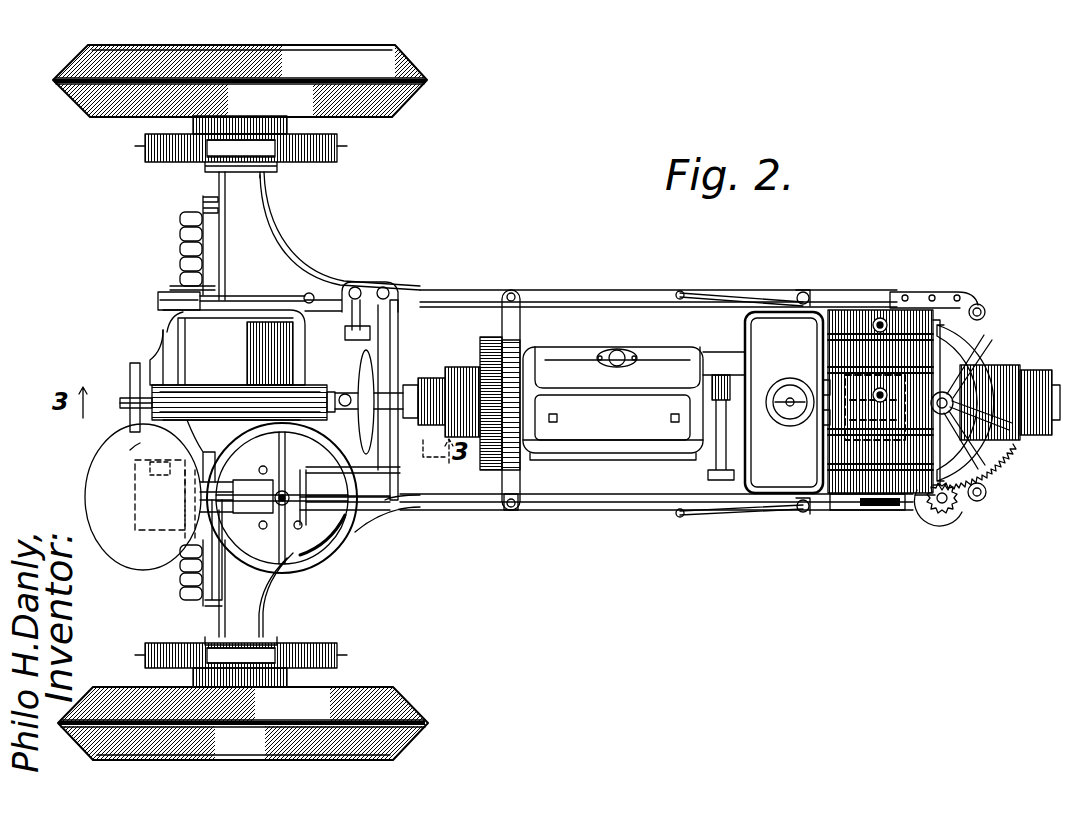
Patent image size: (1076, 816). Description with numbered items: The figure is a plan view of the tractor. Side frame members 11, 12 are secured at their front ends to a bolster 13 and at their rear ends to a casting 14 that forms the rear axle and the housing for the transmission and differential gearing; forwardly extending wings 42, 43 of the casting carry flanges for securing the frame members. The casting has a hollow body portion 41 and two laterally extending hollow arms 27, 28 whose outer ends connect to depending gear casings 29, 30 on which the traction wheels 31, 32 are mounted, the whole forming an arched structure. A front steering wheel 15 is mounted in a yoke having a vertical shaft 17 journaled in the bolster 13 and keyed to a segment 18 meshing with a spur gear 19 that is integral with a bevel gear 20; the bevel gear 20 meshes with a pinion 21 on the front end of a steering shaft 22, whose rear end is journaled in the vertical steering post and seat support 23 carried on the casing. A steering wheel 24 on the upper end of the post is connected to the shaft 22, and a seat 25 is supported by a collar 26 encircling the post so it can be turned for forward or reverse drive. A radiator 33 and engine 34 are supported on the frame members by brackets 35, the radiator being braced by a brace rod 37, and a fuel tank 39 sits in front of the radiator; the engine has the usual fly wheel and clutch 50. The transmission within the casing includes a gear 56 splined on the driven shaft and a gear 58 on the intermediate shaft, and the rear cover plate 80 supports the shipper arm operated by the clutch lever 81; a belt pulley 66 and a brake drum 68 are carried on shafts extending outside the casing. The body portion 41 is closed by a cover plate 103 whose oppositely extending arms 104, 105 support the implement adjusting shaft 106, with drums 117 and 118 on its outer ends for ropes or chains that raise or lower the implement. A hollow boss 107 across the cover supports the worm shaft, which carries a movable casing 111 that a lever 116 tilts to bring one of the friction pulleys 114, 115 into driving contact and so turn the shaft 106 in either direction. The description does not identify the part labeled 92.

The traction wheel 31 is at (395, 110).
The depending gear casing 29 is at (330, 165).
The laterally extending arm 27 is at (268, 206).
The casting 14 is at (292, 246).
The adjusting shaft 106 is at (195, 212).
The drum 118 is at (176, 235).
The brake drum 68 is at (166, 288).
The hollow body portion 41 is at (156, 310).
The sleeve or arm 105 is at (180, 318).
The cover plate 103 is at (150, 348).
The rear cover plate 80 is at (130, 373).
The clutch lever 81 is at (140, 410).
The sleeve or arm 104 is at (134, 442).
The belt pulley 66 is at (200, 428).
The seat 25 is at (183, 568).
The drum 117 is at (200, 578).
The collar 26 is at (218, 592).
The laterally extending arm 28 is at (268, 617).
The depending gear casing 30 is at (330, 648).
The traction wheel 32 is at (405, 700).
The hollow boss 107 is at (213, 390).
The friction pulley 114 is at (386, 286).
The lever 116 is at (372, 312).
The movable casing 111 is at (374, 370).
The friction pulley 115 is at (398, 400).
The forwardly extending wing 42 is at (516, 296).
The side frame member 11 is at (545, 290).
The fly wheel and clutch 50 is at (500, 360).
The engine 34 is at (605, 432).
The brace rod 37 is at (725, 294).
The fuel tank 39 is at (858, 310).
The bolster 13 is at (975, 300).
The vertical shaft 17 is at (955, 388).
The steering wheel 15 is at (1030, 366).
The segment 18 is at (985, 466).
The spur gear 19 is at (985, 500).
The bevel gear 20 is at (960, 514).
The pinion 21 is at (918, 515).
The steering shaft 22 is at (870, 509).
The gear 56 is at (810, 510).
The radiator 33 is at (773, 490).
The gear 58 is at (740, 510).
The side frame member 12 is at (598, 510).
The bracket 35 is at (520, 510).
The forwardly extending wing 43 is at (402, 507).
The steering rod 92 is at (368, 503).
The steering wheel 24 is at (345, 522).
The vertical steering post and seat support 23 is at (300, 508).